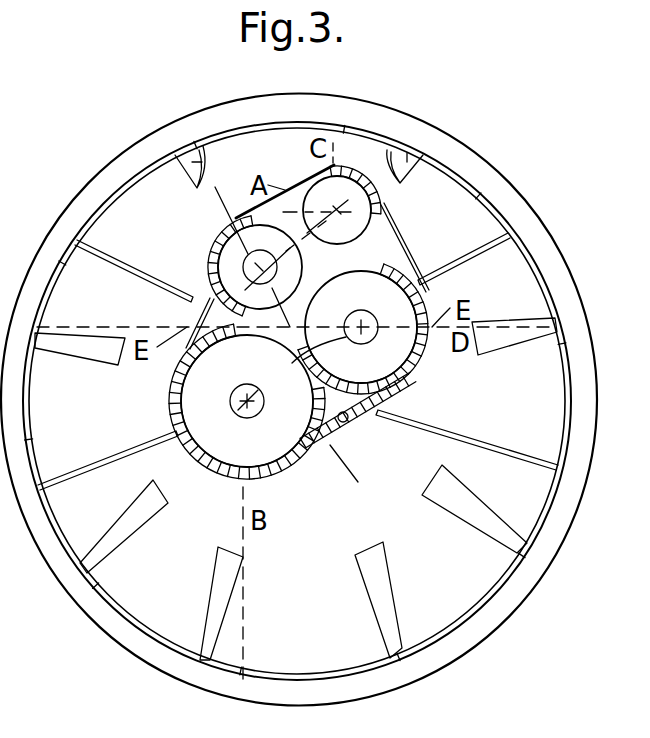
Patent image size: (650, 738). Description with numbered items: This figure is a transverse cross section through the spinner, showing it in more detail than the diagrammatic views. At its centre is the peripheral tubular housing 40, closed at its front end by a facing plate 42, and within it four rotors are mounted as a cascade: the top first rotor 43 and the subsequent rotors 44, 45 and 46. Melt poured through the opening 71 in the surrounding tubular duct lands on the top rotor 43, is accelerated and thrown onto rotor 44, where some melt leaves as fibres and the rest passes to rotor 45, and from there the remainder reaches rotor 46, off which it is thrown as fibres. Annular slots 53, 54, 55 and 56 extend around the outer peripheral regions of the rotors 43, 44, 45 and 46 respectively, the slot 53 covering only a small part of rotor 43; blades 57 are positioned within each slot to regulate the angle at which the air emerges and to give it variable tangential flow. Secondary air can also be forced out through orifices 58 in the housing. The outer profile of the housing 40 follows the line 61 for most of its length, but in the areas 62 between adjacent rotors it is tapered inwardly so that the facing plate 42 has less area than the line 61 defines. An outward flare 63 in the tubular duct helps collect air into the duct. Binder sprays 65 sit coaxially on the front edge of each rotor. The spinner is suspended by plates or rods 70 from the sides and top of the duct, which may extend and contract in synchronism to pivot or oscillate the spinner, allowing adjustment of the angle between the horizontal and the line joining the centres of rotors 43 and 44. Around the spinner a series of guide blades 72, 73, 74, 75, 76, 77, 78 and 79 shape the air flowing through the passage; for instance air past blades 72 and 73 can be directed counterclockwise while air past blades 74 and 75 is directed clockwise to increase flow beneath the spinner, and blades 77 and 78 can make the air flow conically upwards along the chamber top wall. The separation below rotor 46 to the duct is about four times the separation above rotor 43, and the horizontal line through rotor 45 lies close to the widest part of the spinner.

The peripheral tubular housing 40 is at (403, 234).
The facing plate 42 is at (334, 281).
The top first rotor 43 is at (303, 180).
The subsequent rotor 44 is at (230, 262).
The subsequent rotor 45 is at (375, 305).
The subsequent rotor 46 is at (260, 370).
The annular slot 53 is at (380, 208).
The annular slot 54 is at (215, 250).
The annular slot 55 is at (423, 358).
The annular slot 56 is at (168, 400).
The blades 57 is at (425, 313).
The orifices 58 is at (360, 430).
The line of outer housing profile 61 is at (203, 318).
The tapered areas 62 is at (208, 307).
The outward flare 63 is at (502, 176).
The binder sprays 65 is at (252, 394).
The plates or rods 70 is at (117, 262).
The opening 71 is at (310, 123).
The guide blade 72 is at (134, 534).
The guide blade 73 is at (223, 587).
The guide blade 74 is at (388, 583).
The guide blade 75 is at (477, 515).
The guide blade 76 is at (518, 344).
The guide blade 77 is at (409, 140).
The guide blade 78 is at (195, 164).
The guide blade 79 is at (105, 336).